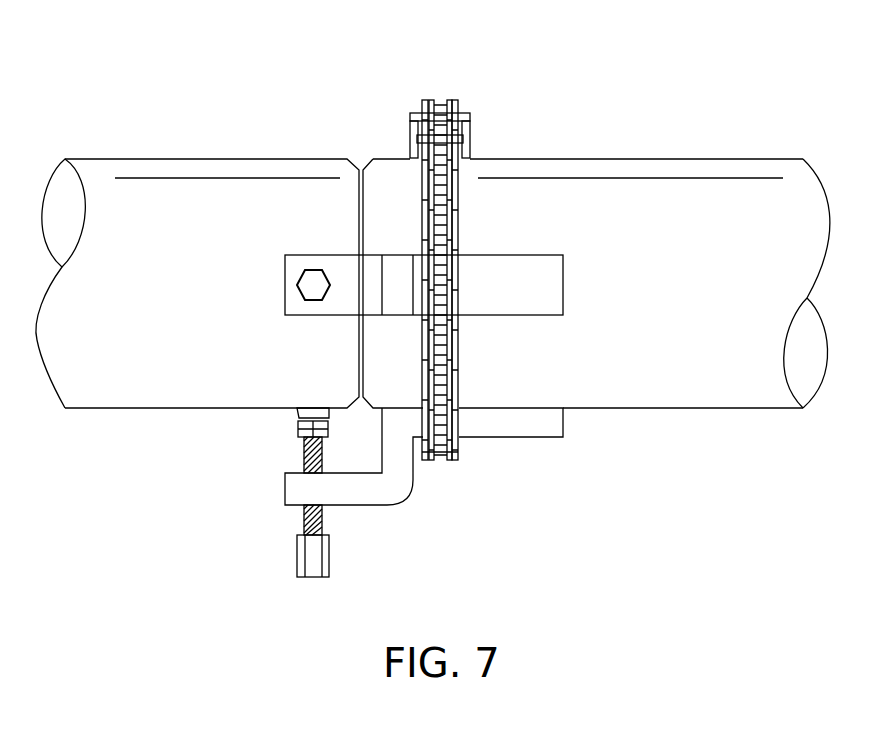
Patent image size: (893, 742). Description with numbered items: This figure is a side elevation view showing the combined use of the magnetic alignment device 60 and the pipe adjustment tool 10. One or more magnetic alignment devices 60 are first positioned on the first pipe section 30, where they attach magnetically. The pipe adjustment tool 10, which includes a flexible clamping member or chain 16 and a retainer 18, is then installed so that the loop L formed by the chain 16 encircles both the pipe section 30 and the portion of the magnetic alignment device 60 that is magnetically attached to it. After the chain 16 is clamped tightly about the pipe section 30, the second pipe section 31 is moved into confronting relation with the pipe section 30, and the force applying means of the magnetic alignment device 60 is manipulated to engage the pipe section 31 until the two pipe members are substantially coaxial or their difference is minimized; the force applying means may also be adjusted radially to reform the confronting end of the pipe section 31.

The pipe adjustment tool 10 is at (450, 270).
The chain 16 is at (460, 218).
The retainer 18 is at (408, 128).
The first pipe section 30 is at (615, 165).
The pipe section 31 is at (195, 168).
The magnetic alignment device 60 is at (563, 285).
The loop L is at (442, 460).